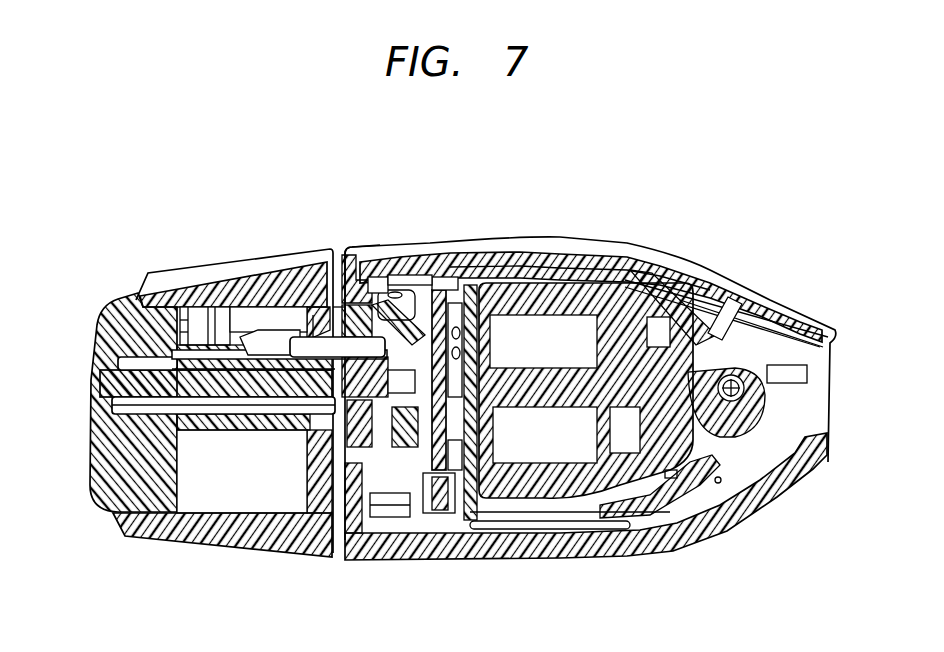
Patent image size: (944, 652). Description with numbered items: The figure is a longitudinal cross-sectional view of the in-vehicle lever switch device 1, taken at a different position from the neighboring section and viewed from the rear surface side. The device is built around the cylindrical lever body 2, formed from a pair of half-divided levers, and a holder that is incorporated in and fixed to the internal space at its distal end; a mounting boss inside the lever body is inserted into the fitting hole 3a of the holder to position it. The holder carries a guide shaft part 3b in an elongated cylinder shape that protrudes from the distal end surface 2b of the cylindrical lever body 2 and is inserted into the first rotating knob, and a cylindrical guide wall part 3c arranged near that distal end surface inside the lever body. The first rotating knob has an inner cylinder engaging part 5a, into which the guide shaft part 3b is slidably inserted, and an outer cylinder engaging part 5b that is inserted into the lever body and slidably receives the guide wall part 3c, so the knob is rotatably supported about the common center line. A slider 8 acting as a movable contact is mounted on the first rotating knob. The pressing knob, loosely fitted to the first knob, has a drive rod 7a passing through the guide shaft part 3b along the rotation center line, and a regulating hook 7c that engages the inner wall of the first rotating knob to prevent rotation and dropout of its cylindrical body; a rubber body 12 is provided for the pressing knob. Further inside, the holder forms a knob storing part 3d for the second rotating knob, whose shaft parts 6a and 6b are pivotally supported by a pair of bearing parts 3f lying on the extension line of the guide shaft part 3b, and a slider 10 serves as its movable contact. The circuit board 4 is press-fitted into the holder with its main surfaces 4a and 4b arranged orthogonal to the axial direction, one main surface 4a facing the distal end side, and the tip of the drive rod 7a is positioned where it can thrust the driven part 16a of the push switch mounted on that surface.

The in-vehicle lever switch device 1 is at (149, 254).
The cylindrical lever body 2 is at (590, 556).
The distal end surface 2b is at (368, 520).
The fitting hole 3a is at (818, 420).
The guide shaft part 3b is at (222, 380).
The guide wall part 3c is at (383, 268).
The knob storing part 3d is at (622, 270).
The bearing parts 3f is at (512, 262).
The circuit board 4 is at (440, 510).
The main surface 4a is at (430, 480).
The main surface 4b is at (450, 462).
The inner cylinder engaging part 5a is at (108, 333).
The outer cylinder engaging part 5b is at (355, 250).
The shaft part 6a is at (725, 365).
The shaft part 6b is at (516, 405).
The drive rod 7a is at (282, 378).
The regulating hook 7c is at (245, 335).
The slider 8 is at (430, 268).
The slider 10 is at (475, 270).
The rubber body 12 is at (197, 322).
The driven part 16a is at (418, 387).